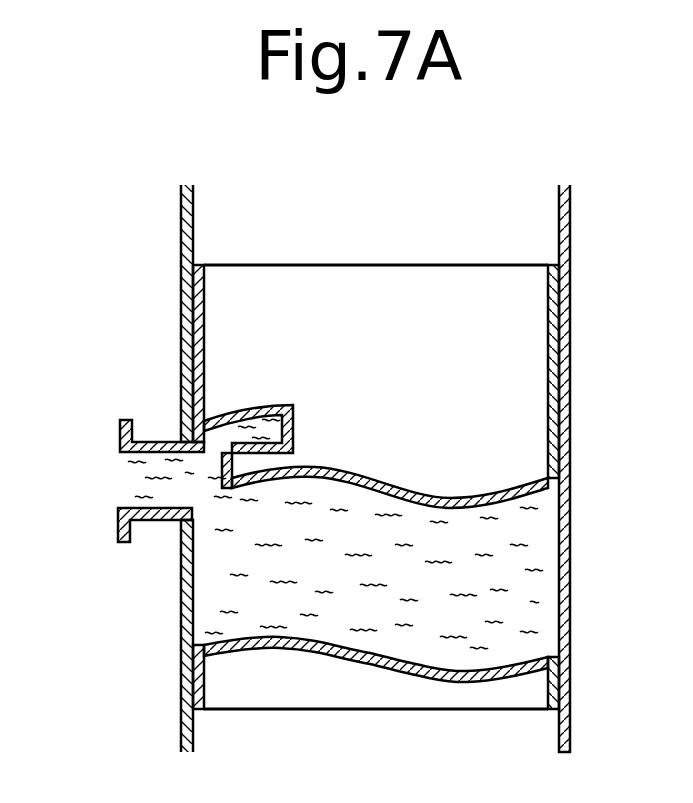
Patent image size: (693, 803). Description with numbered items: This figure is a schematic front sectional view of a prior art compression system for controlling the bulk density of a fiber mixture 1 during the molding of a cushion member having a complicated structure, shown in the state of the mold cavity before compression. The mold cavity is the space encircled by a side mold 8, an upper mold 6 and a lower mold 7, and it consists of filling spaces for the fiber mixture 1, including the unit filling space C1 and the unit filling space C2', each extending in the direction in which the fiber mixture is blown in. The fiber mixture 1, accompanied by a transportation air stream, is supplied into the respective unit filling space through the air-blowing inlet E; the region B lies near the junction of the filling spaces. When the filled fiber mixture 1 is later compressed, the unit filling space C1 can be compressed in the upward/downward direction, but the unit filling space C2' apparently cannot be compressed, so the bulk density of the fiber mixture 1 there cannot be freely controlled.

The fiber mixture 1 is at (512, 557).
The upper mold 6 is at (492, 480).
The lower mold 7 is at (522, 692).
The side mold 8 is at (560, 578).
The unit filling space C1 is at (205, 578).
The unit filling space C2' is at (181, 391).
The liquid boundary region B is at (223, 468).
The air-blowing inlet E is at (118, 474).